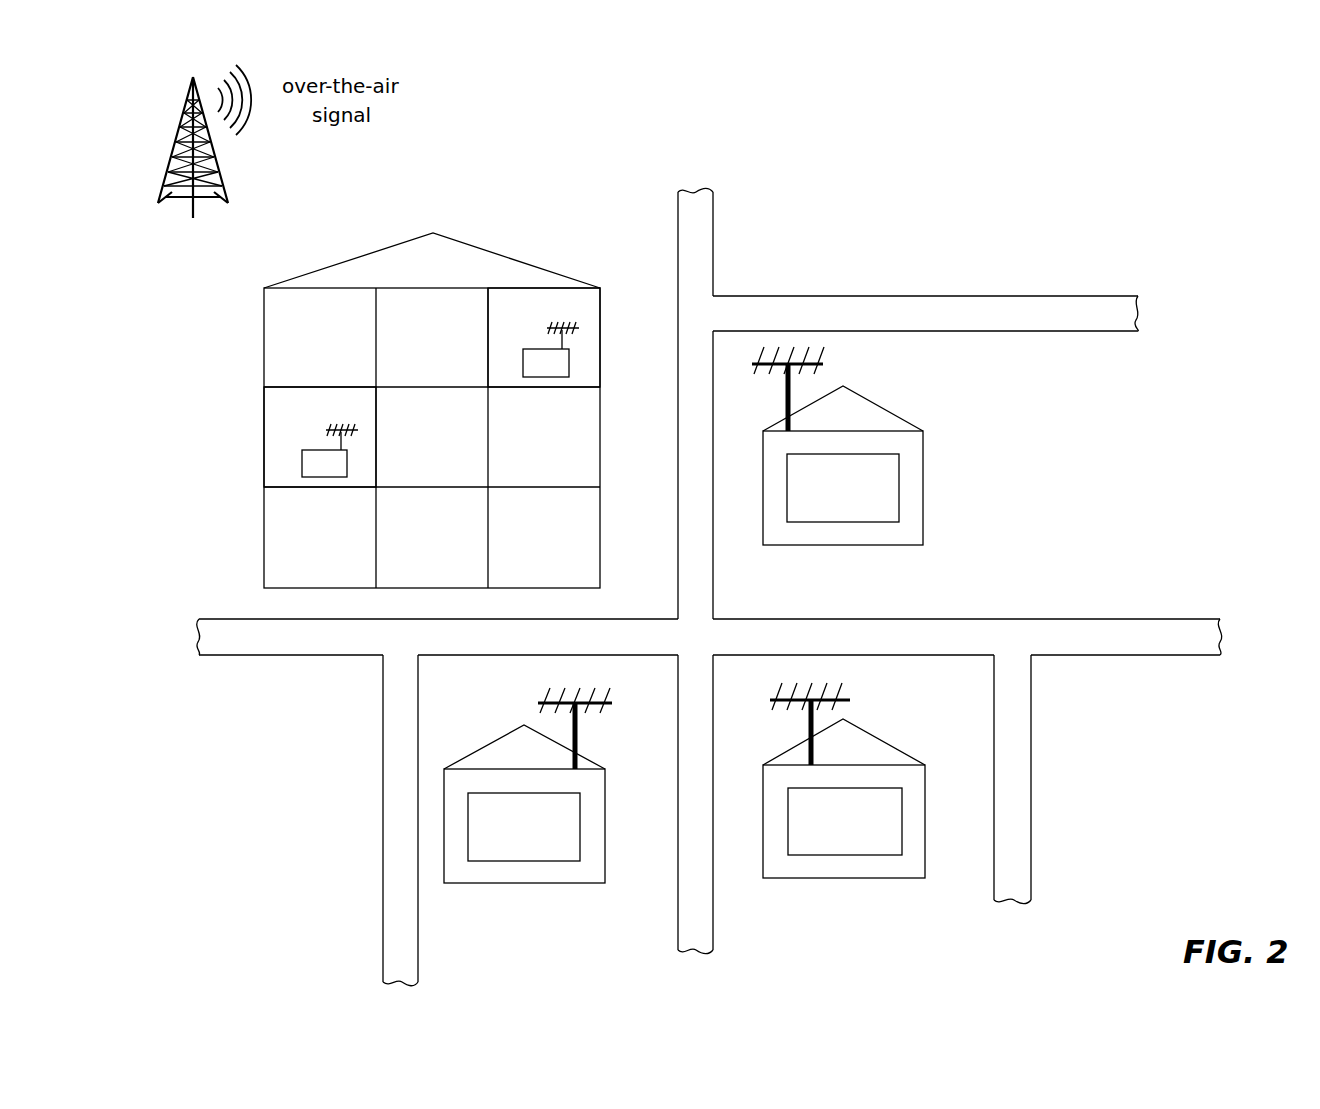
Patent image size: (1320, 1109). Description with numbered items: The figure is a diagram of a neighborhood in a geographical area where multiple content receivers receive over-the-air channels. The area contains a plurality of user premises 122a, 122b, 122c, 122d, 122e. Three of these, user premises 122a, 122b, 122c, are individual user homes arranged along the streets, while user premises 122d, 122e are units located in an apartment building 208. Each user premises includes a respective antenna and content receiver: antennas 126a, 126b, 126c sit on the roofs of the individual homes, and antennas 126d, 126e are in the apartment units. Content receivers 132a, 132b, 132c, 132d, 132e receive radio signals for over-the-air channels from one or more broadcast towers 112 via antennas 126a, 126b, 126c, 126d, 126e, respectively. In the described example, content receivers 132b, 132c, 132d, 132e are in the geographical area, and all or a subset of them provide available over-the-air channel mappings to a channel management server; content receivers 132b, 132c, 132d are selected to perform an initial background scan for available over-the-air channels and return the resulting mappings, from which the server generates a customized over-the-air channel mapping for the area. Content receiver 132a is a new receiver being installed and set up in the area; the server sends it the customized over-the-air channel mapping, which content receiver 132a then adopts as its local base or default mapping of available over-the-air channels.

The broadcast tower 112 is at (178, 133).
The apartment building 208 is at (540, 234).
The user premises 122a is at (851, 807).
The user premises 122b is at (560, 812).
The user premises 122c is at (871, 479).
The user premises 122d is at (600, 302).
The user premises 122e is at (264, 396).
The antenna 126a is at (850, 700).
The antenna 126b is at (612, 703).
The antenna 126c is at (823, 364).
The antenna 126d is at (580, 328).
The antenna 126e is at (328, 428).
The content receiver 132a is at (842, 855).
The content receiver 132b is at (522, 861).
The content receiver 132c is at (899, 490).
The content receiver 132d is at (569, 372).
The content receiver 132e is at (302, 460).